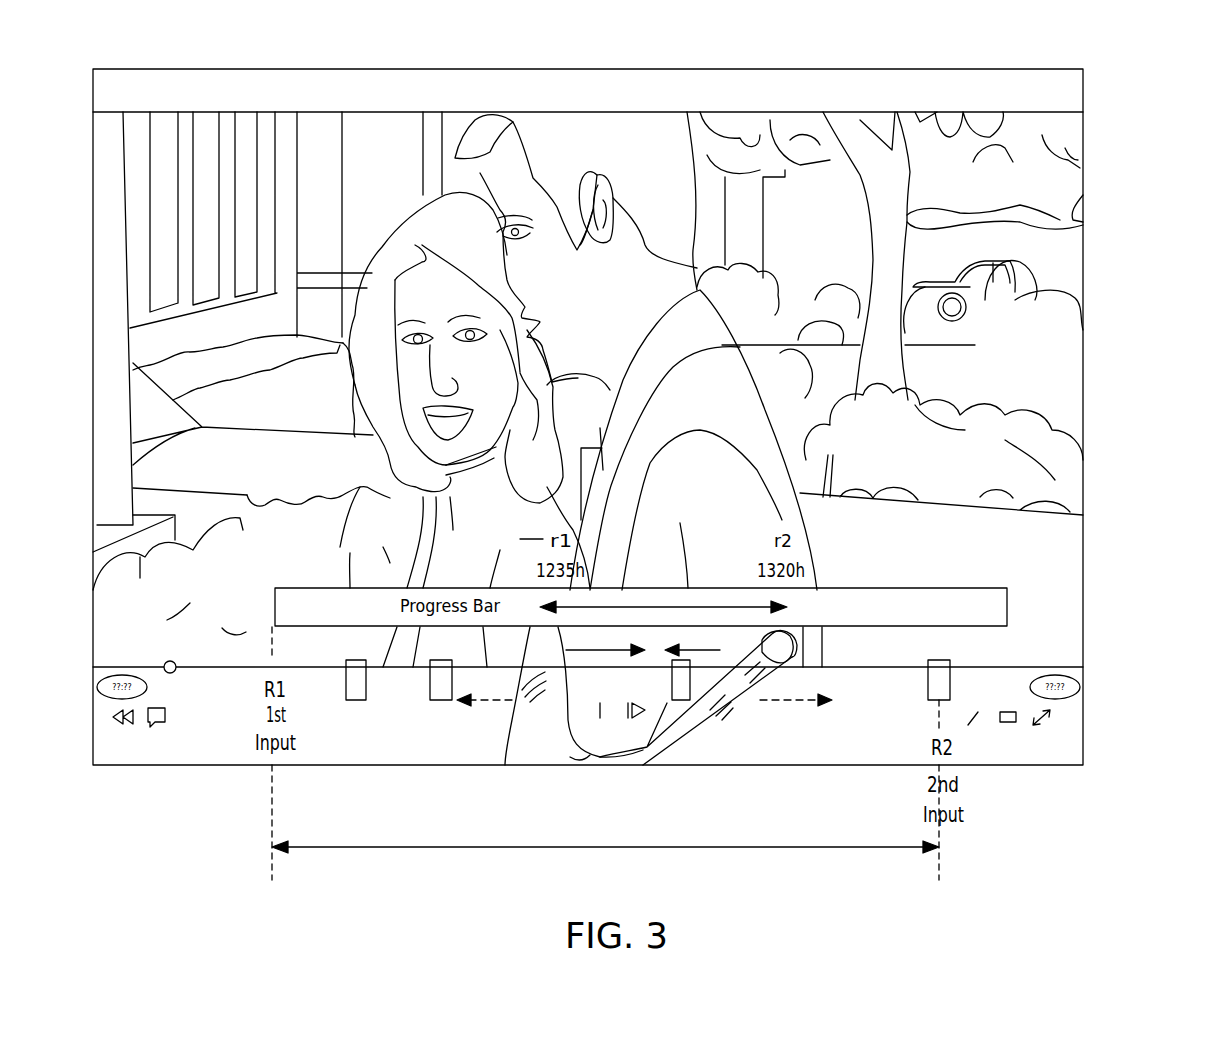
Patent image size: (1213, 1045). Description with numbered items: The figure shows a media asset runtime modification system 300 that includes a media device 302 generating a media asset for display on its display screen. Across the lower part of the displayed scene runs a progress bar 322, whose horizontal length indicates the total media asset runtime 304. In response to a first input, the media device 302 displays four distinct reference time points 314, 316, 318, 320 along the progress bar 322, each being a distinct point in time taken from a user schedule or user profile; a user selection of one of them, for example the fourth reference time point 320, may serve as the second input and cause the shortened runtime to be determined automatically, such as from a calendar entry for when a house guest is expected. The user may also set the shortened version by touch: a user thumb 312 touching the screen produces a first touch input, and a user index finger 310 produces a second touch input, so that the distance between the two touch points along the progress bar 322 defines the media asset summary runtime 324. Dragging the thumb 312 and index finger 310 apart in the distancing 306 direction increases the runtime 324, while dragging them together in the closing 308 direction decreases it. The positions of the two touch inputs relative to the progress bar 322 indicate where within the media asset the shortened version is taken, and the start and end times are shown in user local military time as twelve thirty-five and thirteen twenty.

The media asset runtime modification system 300 is at (1143, 104).
The media device 302 is at (1083, 205).
The total media asset runtime 304 is at (628, 848).
The distancing direction 306 is at (512, 700).
The closing direction 308 is at (583, 652).
The user index finger 310 is at (700, 748).
The user thumb 312 is at (537, 748).
The reference time point 314 is at (347, 686).
The reference time point 316 is at (433, 685).
The reference time point 318 is at (645, 750).
The reference time point 320 is at (932, 683).
The progress bar 322 is at (903, 588).
The media asset summary runtime 324 is at (677, 607).